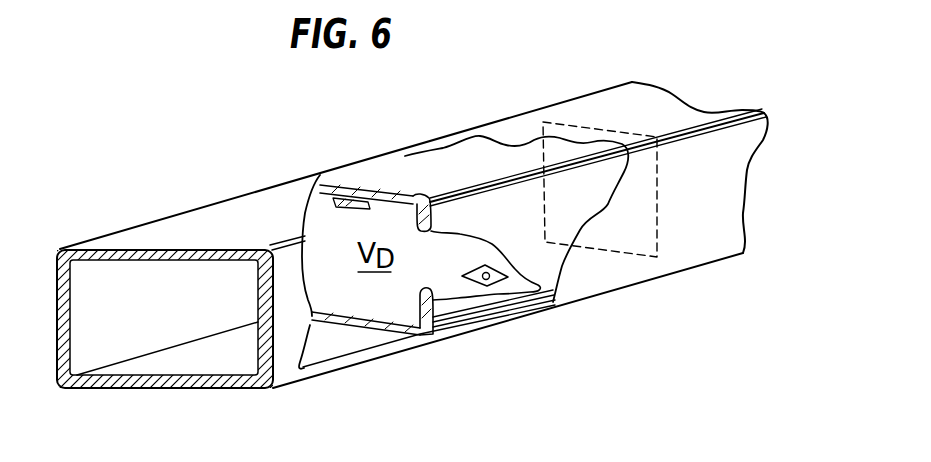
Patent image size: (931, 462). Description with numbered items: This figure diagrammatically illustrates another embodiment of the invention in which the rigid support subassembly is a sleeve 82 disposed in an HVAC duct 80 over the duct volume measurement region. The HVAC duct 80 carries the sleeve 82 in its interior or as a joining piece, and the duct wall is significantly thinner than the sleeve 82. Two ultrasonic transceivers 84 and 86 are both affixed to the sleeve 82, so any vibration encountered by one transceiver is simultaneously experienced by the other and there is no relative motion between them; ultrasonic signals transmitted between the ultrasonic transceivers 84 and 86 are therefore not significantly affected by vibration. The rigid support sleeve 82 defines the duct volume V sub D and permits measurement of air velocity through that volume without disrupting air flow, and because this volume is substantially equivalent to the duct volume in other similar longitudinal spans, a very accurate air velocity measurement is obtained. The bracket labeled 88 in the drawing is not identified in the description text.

The HVAC duct 80 is at (110, 235).
The sleeve 82 is at (357, 328).
The ultrasonic transceiver 84 is at (337, 210).
The ultrasonic transceiver 86 is at (492, 287).
The carrier assembly 88 is at (516, 103).